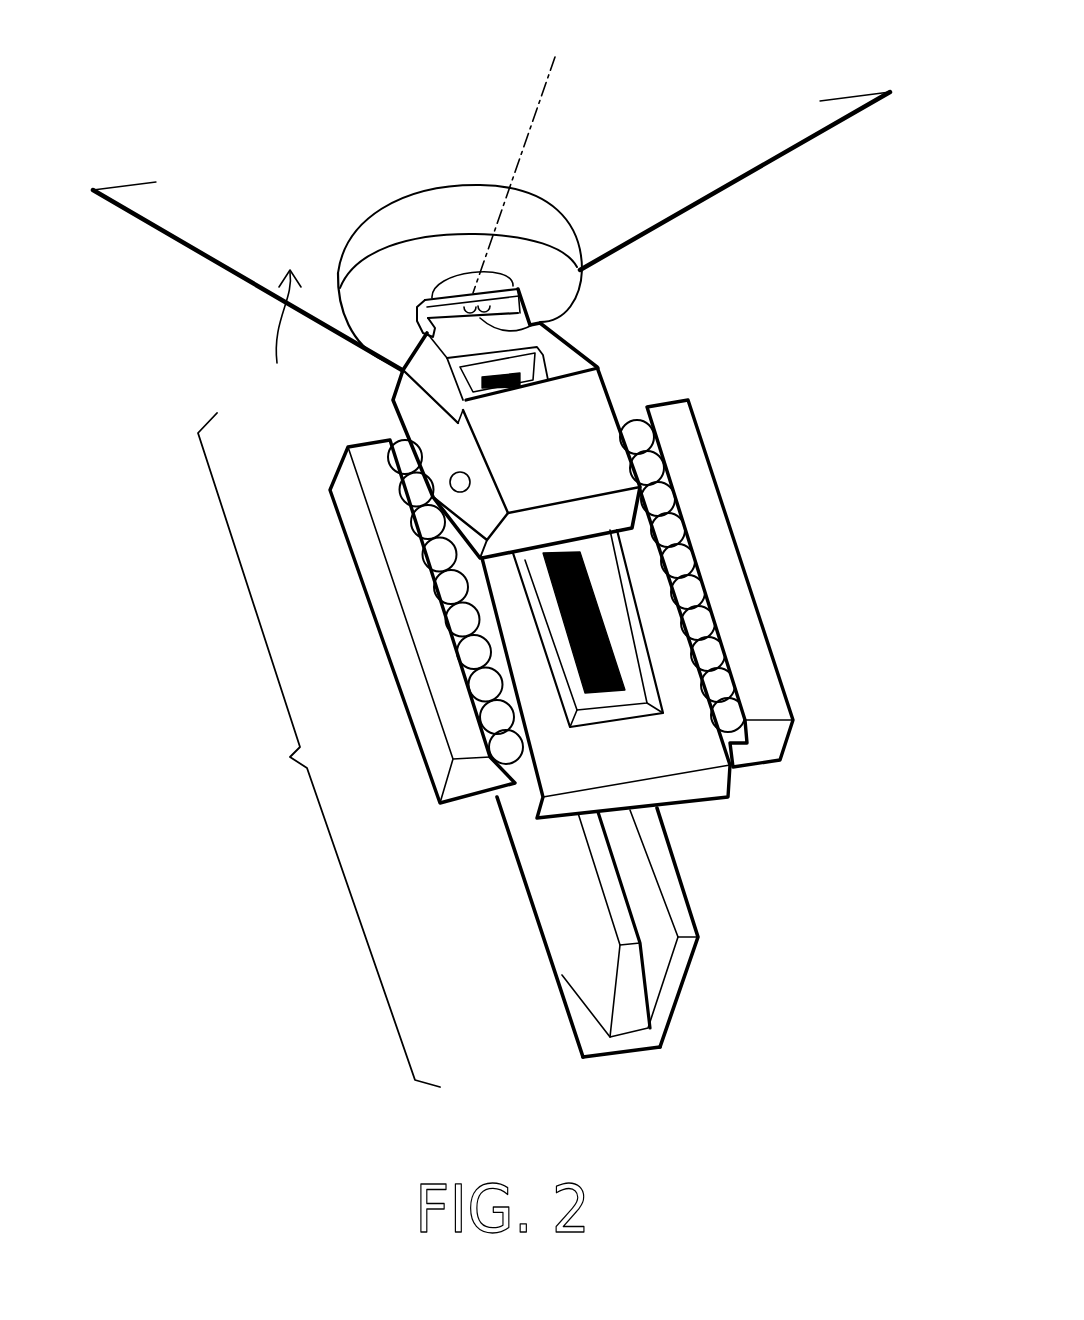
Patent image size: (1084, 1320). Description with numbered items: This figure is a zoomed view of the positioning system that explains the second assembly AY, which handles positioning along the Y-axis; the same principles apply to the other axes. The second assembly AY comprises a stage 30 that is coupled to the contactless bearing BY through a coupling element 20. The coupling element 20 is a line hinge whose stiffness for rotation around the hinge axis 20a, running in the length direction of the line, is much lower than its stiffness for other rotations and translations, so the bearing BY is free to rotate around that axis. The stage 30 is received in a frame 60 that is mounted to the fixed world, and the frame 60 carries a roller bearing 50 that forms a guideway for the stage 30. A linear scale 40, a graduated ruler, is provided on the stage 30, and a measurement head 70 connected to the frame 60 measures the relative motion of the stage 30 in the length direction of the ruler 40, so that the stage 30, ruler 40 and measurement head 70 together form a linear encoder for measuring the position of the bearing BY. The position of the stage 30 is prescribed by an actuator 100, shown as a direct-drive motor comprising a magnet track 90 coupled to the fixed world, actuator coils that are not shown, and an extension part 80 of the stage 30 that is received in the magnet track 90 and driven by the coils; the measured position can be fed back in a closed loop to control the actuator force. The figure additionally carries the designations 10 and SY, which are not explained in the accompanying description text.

The laser beam 10 is at (208, 228).
The bearing BY is at (430, 215).
The coupling element 20 is at (533, 298).
The hinge axis 20a is at (553, 60).
The scan direction SY is at (280, 334).
The second assembly AY is at (319, 750).
The stage 30 is at (688, 705).
The linear scale 40 is at (608, 645).
The roller bearing 50 is at (443, 585).
The frame 60 is at (407, 660).
The measurement head 70 is at (594, 410).
The extension part 80 is at (622, 834).
The magnet track 90 is at (625, 925).
The actuator 100 is at (694, 927).